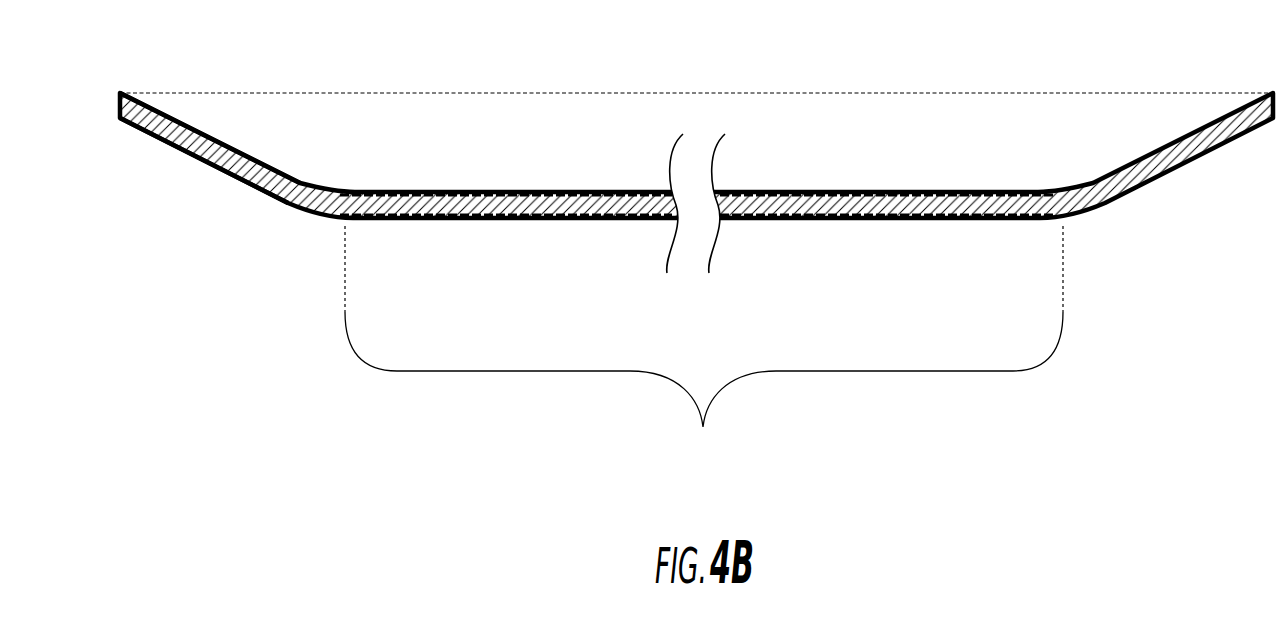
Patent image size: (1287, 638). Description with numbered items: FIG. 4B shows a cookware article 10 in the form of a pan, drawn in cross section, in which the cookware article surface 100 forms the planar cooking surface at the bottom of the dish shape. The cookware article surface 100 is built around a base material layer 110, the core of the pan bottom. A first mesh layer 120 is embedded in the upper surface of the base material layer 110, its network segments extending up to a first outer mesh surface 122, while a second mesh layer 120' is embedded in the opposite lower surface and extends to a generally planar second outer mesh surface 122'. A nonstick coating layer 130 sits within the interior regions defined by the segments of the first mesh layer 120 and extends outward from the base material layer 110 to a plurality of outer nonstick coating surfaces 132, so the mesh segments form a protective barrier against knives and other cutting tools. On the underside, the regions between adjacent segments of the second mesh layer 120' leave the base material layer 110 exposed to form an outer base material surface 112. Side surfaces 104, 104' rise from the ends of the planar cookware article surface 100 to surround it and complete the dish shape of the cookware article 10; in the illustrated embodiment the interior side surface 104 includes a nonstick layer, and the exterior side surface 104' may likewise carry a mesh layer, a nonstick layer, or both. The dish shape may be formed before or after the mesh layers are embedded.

The cookware article 10 is at (696, 137).
The cookware article surface 100 is at (704, 346).
The interior side surface 104 is at (210, 107).
The exterior side surface 104' is at (199, 165).
The base material layer 110 is at (257, 178).
The outer base material surface 112 is at (778, 219).
The first mesh layer 120 is at (506, 160).
The second mesh layer 120' is at (506, 249).
The first outer mesh surface 122 is at (506, 158).
The second outer mesh surface 122' is at (886, 249).
The nonstick coating layer 130 is at (794, 192).
The outer nonstick coating surface 132 is at (838, 192).